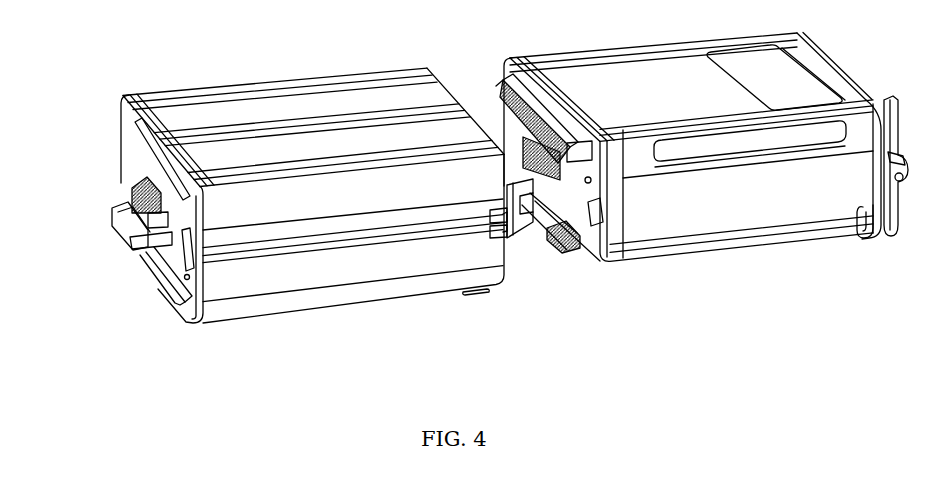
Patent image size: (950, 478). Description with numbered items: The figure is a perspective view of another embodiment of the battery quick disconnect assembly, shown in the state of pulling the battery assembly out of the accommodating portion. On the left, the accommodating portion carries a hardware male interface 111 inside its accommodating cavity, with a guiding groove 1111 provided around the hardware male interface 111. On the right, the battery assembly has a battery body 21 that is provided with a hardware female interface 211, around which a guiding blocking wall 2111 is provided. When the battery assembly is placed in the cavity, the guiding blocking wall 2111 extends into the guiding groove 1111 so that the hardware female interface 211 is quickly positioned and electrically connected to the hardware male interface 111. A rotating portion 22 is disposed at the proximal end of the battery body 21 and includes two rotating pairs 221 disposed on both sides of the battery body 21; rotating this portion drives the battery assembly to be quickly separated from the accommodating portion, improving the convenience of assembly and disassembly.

The hardware male interface 111 is at (125, 202).
The guiding groove 1111 is at (158, 240).
The battery body 21 is at (720, 190).
The hardware female interface 211 is at (505, 110).
The guiding blocking wall 2111 is at (575, 240).
The rotating portion 22 is at (887, 240).
The rotating pairs 221 is at (866, 232).